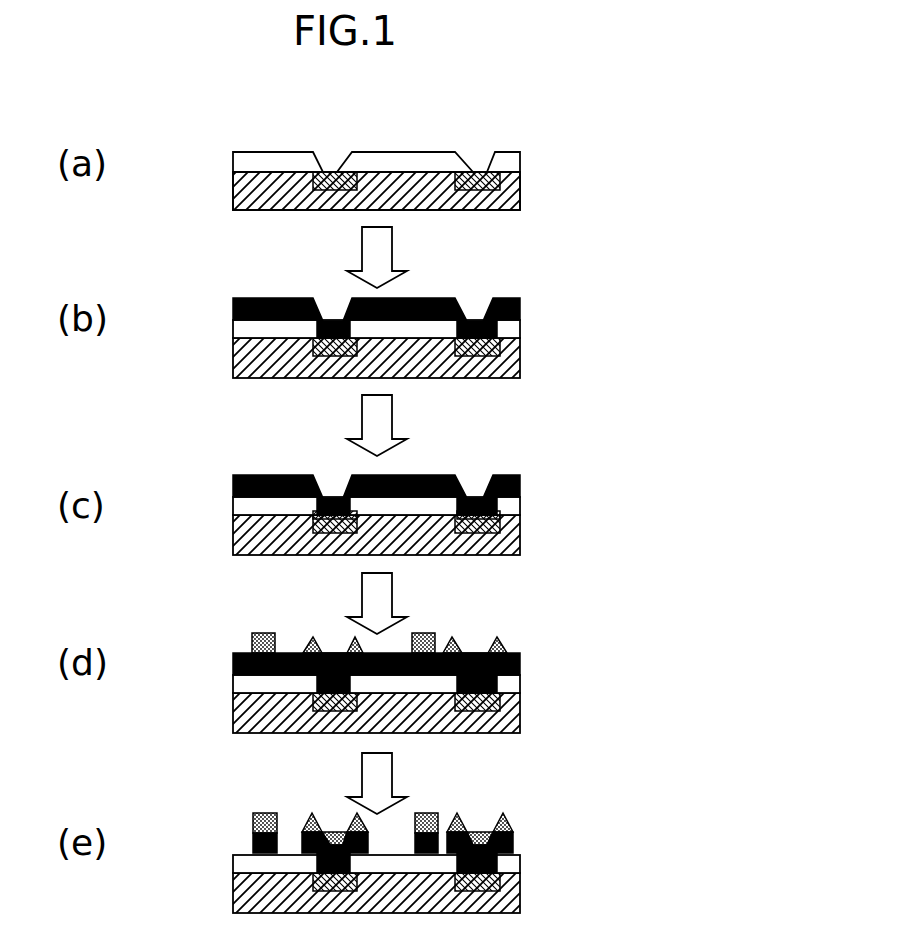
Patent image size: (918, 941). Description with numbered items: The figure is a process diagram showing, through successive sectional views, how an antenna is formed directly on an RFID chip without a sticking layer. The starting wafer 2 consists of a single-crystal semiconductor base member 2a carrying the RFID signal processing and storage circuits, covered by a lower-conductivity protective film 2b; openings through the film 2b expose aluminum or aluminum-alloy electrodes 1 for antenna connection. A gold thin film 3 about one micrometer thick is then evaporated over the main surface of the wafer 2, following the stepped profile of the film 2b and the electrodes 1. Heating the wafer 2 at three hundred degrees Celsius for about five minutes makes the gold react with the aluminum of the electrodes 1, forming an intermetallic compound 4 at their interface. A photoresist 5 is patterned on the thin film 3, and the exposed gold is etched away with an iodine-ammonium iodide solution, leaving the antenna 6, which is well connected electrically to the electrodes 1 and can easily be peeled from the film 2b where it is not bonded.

The electrodes for antenna connection 1 is at (477, 168).
The wafer 2 is at (522, 143).
The base member 2a is at (243, 194).
The film 2b is at (248, 163).
The thin film 3 is at (519, 302).
The intermetallic compound 4 is at (494, 514).
The photoresist 5 is at (505, 635).
The antenna 6 is at (517, 838).